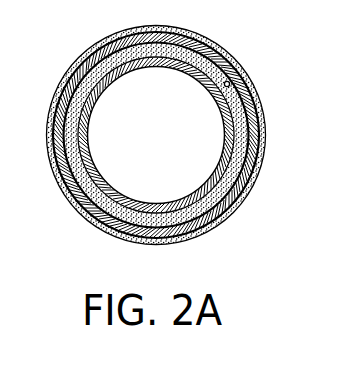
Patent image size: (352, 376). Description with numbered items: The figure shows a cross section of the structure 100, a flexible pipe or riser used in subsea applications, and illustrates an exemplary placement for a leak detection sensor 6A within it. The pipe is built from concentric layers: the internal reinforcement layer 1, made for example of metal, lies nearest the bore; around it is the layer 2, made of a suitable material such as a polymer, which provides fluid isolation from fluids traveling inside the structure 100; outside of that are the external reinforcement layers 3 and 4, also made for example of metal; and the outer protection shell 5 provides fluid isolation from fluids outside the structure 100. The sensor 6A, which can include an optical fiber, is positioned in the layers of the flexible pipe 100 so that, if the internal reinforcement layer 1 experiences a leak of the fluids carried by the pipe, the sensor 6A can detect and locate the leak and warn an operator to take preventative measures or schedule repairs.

The structure 100 is at (192, 154).
The internal reinforcement layer 1 is at (222, 42).
The fluid isolation layer 2 is at (237, 145).
The external reinforcement layer 3 is at (256, 118).
The external reinforcement layer 4 is at (245, 172).
The outer protection shell 5 is at (233, 207).
The sensor 6A is at (229, 83).